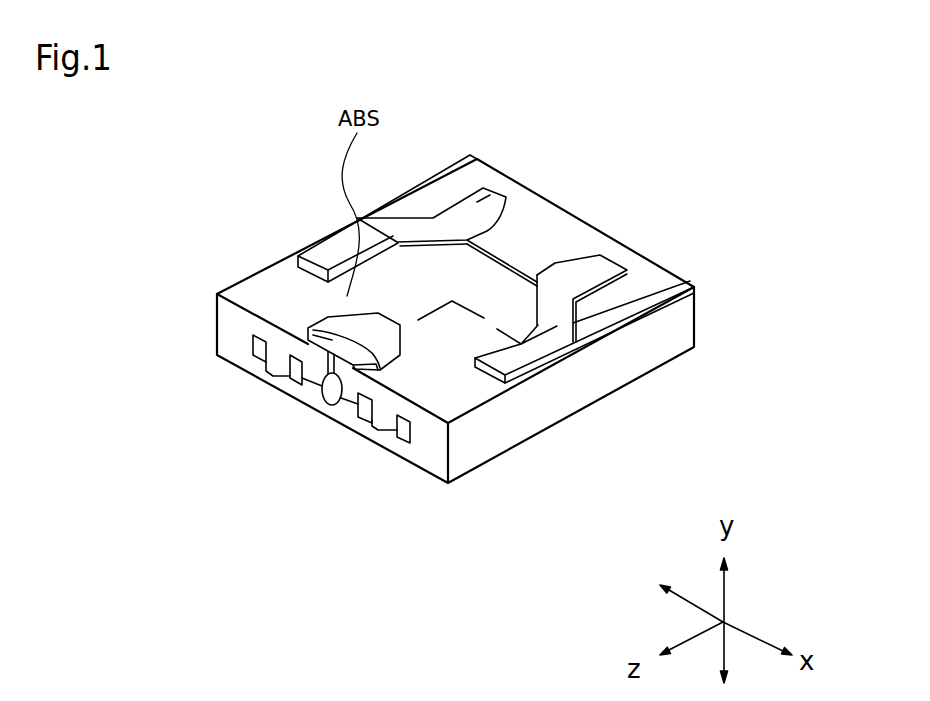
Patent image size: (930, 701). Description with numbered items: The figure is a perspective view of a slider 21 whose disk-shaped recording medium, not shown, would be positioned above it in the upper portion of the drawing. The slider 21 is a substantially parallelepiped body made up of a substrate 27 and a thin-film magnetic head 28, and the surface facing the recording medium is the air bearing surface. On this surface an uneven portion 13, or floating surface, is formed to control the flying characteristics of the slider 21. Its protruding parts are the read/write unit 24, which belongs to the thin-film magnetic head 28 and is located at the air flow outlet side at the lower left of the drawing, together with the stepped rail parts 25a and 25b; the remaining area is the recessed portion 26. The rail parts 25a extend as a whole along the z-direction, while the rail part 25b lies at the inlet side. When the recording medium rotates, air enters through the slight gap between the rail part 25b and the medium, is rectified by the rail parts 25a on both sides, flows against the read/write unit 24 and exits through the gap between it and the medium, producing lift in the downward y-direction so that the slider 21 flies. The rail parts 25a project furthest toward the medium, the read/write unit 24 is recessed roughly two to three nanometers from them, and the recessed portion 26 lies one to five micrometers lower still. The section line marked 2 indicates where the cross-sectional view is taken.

The slider 21 is at (290, 187).
The uneven portion 13 is at (432, 266).
The read/write unit 24 is at (310, 330).
The recessed portion 26 is at (279, 278).
The rail parts 25a is at (502, 206).
The rail part 25b is at (517, 195).
The section line of Fig. 2 is at (722, 237).
The substrate 27 is at (696, 364).
The thin-film magnetic head 28 is at (528, 456).